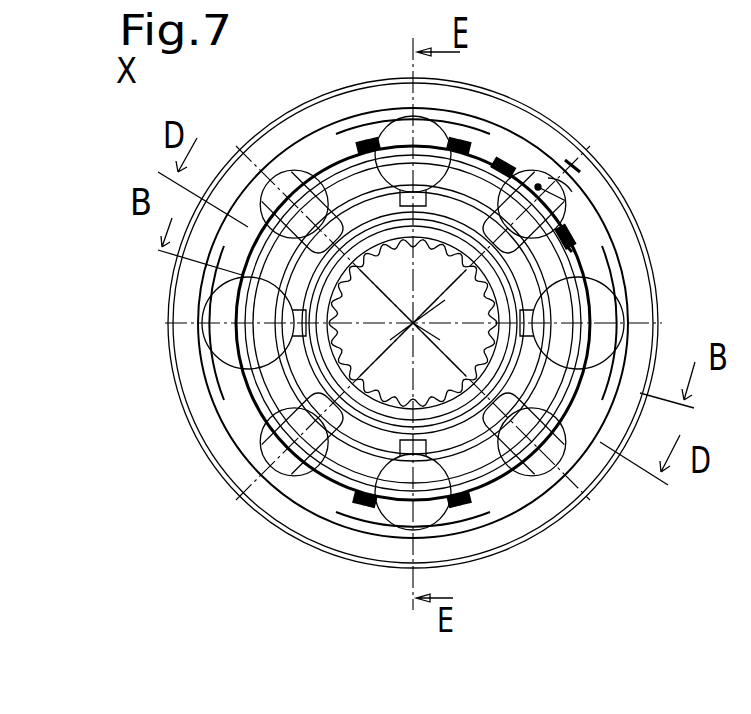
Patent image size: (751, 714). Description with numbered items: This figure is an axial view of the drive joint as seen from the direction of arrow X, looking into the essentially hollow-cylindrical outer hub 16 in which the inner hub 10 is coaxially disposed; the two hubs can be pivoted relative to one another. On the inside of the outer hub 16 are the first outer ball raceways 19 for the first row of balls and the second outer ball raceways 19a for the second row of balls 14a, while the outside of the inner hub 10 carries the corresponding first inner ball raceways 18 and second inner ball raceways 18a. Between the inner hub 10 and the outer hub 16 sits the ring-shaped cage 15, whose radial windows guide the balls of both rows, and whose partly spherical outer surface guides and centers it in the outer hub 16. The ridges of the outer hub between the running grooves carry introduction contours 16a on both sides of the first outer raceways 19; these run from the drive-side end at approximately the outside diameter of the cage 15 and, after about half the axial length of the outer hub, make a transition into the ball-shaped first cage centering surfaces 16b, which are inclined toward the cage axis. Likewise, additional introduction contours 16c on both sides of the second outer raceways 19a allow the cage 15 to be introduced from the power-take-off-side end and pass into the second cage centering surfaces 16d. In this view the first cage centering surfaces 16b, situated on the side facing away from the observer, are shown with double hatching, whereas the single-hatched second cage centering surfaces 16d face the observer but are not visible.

The inner hub 10 is at (440, 323).
The cage 15 is at (494, 400).
The outer hub 16 is at (474, 331).
The introduction contours 16a is at (347, 134).
The first cage centering surfaces 16b is at (364, 137).
The additional introduction contours 16c is at (548, 165).
The second cage centering surfaces 16d is at (578, 160).
The first inner ball raceways 18 is at (520, 170).
The second inner ball raceways 18a is at (516, 214).
The first outer ball raceways 19 is at (466, 125).
The second outer ball raceways 19a is at (583, 203).
The second row of balls 14a is at (568, 180).